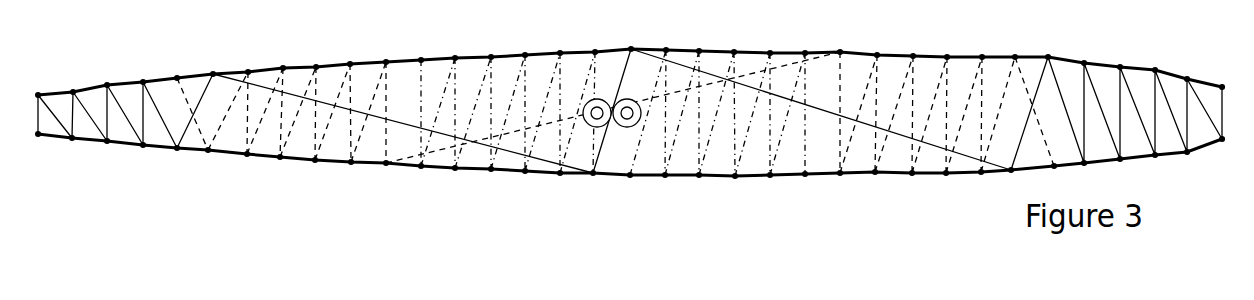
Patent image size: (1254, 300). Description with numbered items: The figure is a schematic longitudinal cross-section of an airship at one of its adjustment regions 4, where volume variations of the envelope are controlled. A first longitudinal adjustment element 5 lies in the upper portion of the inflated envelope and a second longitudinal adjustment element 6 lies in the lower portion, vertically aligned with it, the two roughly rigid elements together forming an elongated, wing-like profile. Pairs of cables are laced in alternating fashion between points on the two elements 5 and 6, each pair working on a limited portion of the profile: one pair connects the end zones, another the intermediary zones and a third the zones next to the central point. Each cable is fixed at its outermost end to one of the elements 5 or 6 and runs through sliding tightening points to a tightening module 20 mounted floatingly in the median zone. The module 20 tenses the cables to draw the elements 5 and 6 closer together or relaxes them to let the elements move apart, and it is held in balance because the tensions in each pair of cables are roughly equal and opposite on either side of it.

The adjustment region 4 is at (287, 183).
The first longitudinal adjustment element 5 is at (438, 55).
The second longitudinal adjustment element 6 is at (472, 172).
The tightening module 20 is at (620, 124).